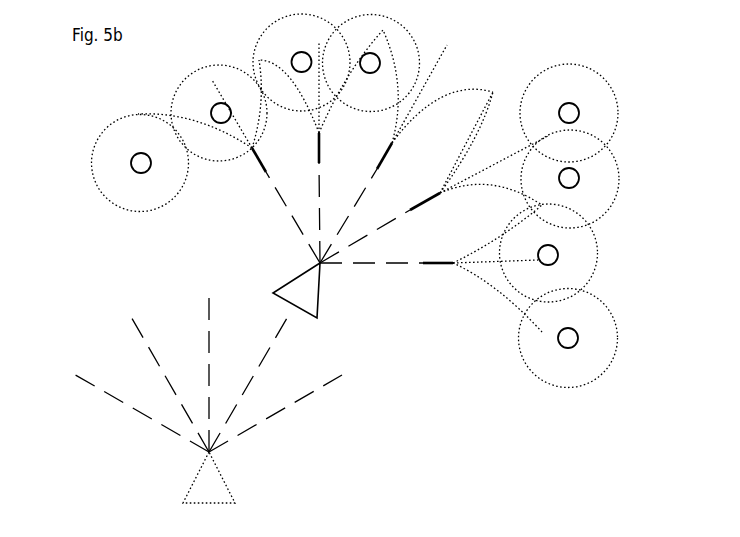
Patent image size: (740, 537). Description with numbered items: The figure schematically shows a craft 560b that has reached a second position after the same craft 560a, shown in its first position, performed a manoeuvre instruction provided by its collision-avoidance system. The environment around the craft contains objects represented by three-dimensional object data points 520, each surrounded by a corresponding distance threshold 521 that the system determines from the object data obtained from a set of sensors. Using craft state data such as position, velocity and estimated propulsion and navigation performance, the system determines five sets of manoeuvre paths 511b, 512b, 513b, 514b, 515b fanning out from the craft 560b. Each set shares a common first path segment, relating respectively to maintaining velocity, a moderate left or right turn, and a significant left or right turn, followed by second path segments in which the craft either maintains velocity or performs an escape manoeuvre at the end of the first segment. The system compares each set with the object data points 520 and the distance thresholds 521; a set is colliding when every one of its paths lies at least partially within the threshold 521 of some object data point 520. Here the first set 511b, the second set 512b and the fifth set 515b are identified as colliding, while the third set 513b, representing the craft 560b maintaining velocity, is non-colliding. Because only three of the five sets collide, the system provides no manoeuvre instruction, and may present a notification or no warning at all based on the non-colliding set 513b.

The three-dimensional object data point 520 is at (131, 166).
The distance threshold 521 is at (108, 199).
The first set of manoeuvre paths 511b is at (265, 164).
The second set of manoeuvre paths 512b is at (319, 163).
The third set of manoeuvre paths 513b is at (374, 168).
The fourth set of manoeuvre paths 514b is at (418, 206).
The fifth set of manoeuvre paths 515b is at (437, 263).
The craft in second position 560b is at (320, 298).
The craft in first position 560a is at (225, 483).